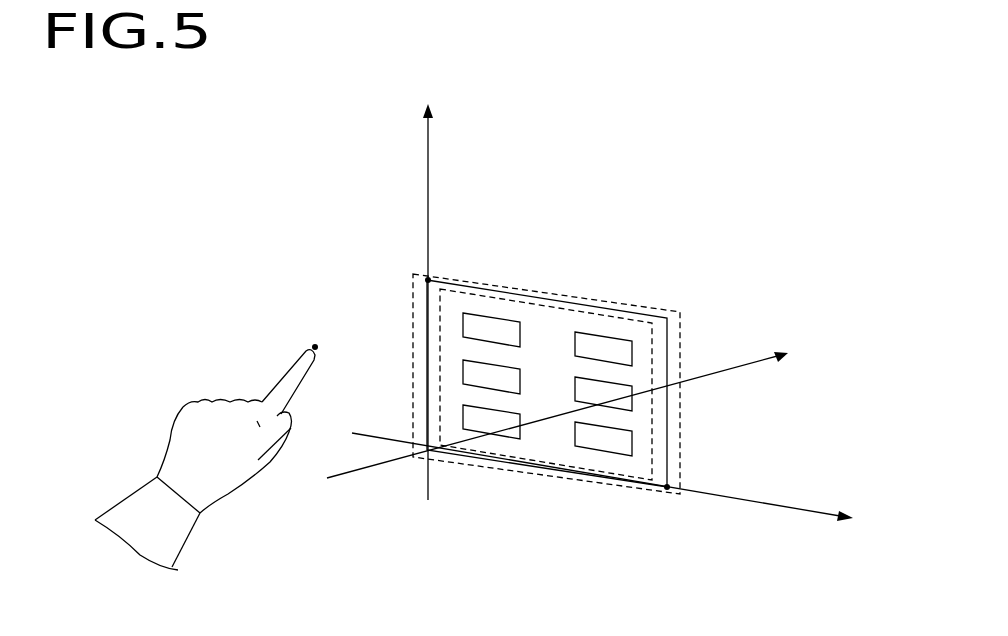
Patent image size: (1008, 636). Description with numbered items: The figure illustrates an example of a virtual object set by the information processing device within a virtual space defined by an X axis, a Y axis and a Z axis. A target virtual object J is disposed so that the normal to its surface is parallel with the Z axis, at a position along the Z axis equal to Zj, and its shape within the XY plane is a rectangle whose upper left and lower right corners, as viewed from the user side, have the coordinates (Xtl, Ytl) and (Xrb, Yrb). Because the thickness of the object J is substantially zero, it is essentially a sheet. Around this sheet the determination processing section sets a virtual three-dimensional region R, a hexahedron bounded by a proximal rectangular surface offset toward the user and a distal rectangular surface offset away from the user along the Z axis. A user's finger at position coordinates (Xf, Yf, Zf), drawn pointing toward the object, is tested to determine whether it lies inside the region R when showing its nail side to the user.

The target virtual object J is at (556, 283).
The virtual three-dimensional region R is at (630, 303).
The X-axis X is at (616, 485).
The Y-axis Y is at (426, 282).
The Z-axis Z is at (571, 408).